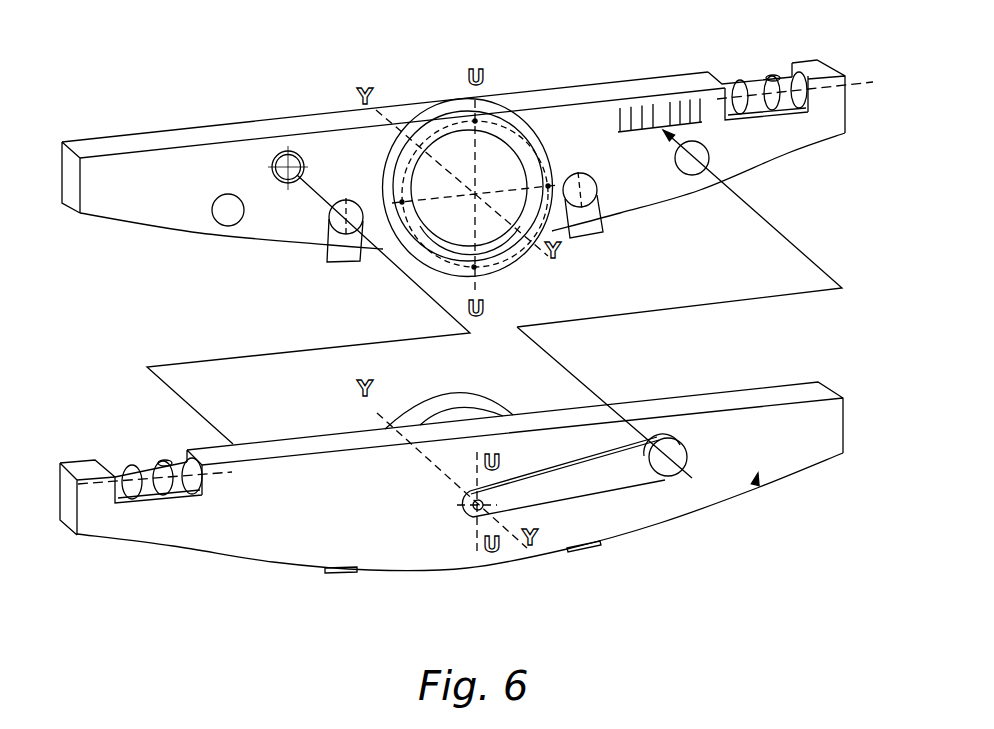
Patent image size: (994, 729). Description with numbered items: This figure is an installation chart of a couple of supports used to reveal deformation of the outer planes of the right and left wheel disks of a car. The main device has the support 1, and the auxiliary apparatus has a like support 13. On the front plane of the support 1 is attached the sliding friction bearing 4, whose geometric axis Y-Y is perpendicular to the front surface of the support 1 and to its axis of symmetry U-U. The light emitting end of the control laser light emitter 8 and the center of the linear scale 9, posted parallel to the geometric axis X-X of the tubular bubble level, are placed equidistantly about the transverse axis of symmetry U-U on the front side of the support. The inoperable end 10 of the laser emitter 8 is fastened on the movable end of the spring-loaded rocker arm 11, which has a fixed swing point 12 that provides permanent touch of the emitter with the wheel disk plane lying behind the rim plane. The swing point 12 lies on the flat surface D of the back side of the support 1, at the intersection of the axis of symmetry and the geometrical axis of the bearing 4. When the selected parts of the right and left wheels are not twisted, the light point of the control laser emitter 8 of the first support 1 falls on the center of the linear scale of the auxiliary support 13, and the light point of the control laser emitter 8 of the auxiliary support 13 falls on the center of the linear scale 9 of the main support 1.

The support 1 is at (788, 152).
The sliding friction bearing 4 is at (442, 115).
The control laser light emitter 8 is at (285, 165).
The linear scale 9 is at (655, 102).
The inoperable end of the laser emitter 10 is at (667, 472).
The spring-loaded rocker arm 11 is at (573, 488).
The swing point 12 is at (473, 517).
The auxiliary support 13 is at (402, 505).
The flat surface of the back side of the support D is at (758, 473).